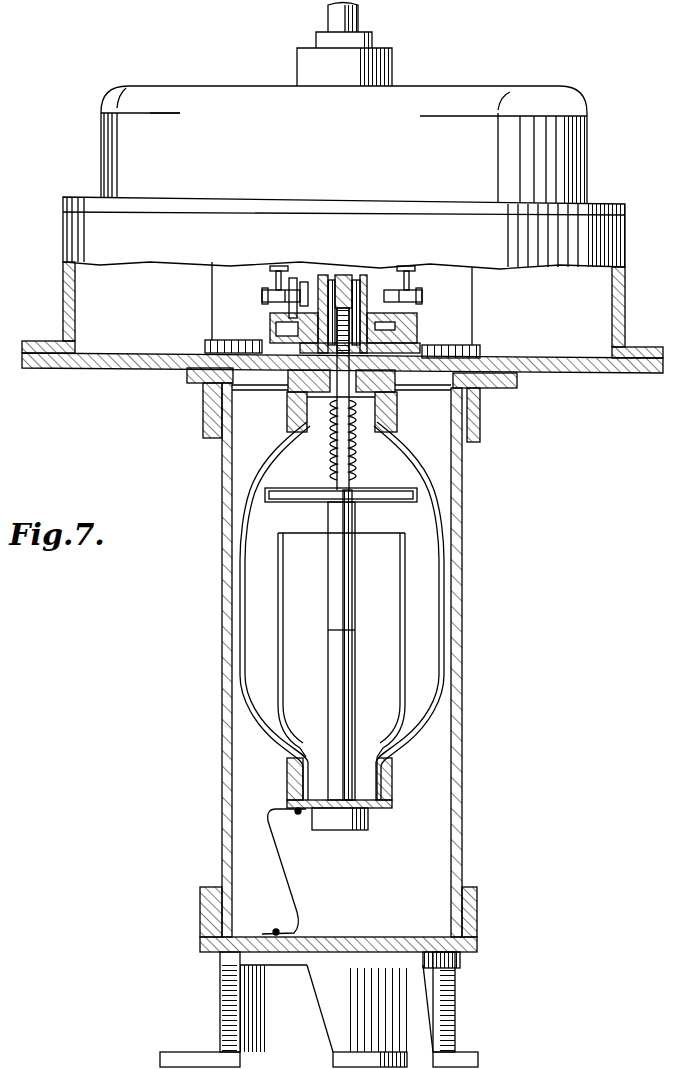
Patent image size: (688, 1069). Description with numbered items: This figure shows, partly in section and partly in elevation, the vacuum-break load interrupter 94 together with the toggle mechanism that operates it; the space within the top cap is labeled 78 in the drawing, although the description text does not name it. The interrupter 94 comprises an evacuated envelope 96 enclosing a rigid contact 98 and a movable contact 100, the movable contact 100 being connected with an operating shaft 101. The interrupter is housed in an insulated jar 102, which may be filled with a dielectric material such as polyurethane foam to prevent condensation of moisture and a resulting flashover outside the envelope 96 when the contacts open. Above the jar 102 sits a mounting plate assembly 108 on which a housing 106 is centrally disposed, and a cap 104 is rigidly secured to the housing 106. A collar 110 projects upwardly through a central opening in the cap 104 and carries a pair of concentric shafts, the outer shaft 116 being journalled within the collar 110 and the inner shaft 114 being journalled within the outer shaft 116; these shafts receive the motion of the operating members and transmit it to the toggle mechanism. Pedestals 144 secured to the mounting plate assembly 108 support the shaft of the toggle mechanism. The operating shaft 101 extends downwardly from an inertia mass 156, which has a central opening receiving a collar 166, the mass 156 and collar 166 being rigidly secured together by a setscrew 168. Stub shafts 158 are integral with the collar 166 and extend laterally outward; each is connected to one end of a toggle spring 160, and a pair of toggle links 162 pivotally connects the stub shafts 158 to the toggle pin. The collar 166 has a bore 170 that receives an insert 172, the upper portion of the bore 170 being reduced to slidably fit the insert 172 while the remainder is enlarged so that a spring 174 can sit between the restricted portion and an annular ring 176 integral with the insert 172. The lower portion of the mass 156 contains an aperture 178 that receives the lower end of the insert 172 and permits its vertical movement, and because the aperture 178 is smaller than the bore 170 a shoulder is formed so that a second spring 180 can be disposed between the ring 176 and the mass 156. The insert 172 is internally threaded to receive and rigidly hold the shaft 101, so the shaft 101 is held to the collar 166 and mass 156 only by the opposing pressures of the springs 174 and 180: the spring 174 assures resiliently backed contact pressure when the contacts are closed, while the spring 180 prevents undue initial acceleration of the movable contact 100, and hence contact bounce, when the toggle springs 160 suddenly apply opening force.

The cover chamber 78 is at (241, 157).
The vacuum-break load interrupter 94 is at (430, 527).
The evacuated envelope 96 is at (406, 450).
The rigid contact 98 is at (346, 658).
The movable contact 100 is at (337, 619).
The operating shaft 101 is at (327, 456).
The insulated jar 102 is at (462, 645).
The cap 104 is at (587, 113).
The housing 106 is at (625, 241).
The mounting plate assembly 108 is at (618, 375).
The collar 110 is at (392, 68).
The inner shaft 114 is at (328, 16).
The outer shaft 116 is at (372, 36).
The pedestals 144 is at (472, 314).
The inertia mass 156 is at (408, 313).
The stub shafts 158 is at (268, 292).
The toggle spring 160 is at (281, 264).
The toggle links 162 is at (383, 268).
The collar 166 is at (327, 276).
The setscrew 168 is at (397, 326).
The bore 170 is at (312, 336).
The insert 172 is at (338, 275).
The spring 174 is at (354, 281).
The annular ring 176 is at (289, 306).
The aperture 178 is at (400, 351).
The spring 180 is at (270, 325).